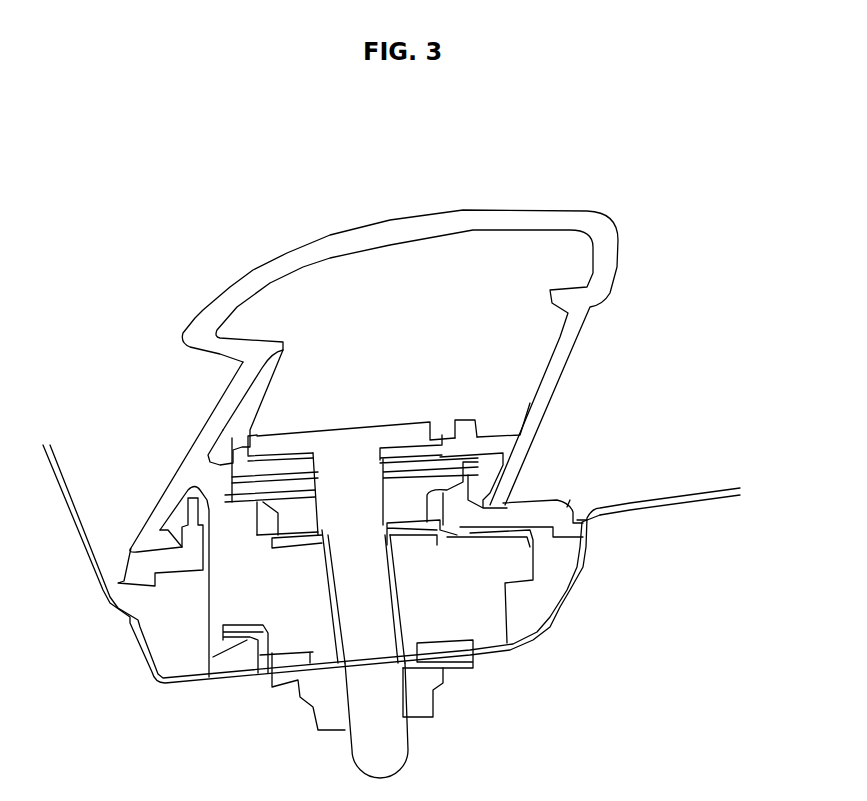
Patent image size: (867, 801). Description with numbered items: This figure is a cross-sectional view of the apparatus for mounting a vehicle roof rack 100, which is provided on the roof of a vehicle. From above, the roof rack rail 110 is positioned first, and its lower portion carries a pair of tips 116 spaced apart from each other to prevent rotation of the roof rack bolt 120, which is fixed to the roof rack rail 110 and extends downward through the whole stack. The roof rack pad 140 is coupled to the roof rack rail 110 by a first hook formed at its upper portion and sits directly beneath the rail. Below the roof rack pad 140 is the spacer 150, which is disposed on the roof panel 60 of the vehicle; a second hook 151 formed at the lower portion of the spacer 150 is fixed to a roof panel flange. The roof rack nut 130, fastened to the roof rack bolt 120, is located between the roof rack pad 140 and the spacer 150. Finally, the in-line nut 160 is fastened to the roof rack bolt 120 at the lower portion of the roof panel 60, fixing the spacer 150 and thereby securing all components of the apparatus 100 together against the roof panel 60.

The apparatus for mounting a vehicle roof rack 100 is at (150, 137).
The roof rack rail 110 is at (618, 250).
The pair of tips 116 is at (252, 432).
The roof rack nut 130 is at (427, 497).
The roof rack pad 140 is at (557, 502).
The spacer 150 is at (582, 560).
The roof panel 60 is at (563, 608).
The roof rack bolt 120 is at (410, 748).
The in-line nut 160 is at (438, 690).
The second hook 151 is at (213, 657).